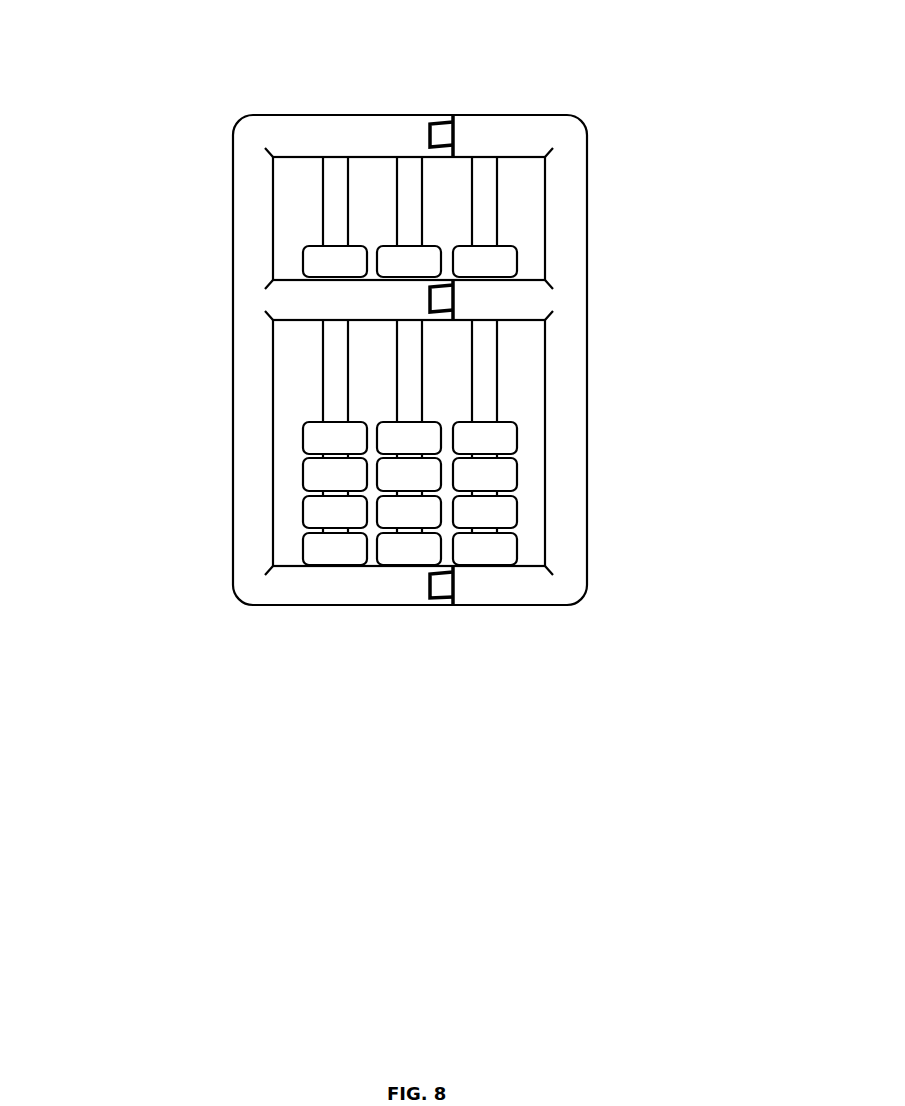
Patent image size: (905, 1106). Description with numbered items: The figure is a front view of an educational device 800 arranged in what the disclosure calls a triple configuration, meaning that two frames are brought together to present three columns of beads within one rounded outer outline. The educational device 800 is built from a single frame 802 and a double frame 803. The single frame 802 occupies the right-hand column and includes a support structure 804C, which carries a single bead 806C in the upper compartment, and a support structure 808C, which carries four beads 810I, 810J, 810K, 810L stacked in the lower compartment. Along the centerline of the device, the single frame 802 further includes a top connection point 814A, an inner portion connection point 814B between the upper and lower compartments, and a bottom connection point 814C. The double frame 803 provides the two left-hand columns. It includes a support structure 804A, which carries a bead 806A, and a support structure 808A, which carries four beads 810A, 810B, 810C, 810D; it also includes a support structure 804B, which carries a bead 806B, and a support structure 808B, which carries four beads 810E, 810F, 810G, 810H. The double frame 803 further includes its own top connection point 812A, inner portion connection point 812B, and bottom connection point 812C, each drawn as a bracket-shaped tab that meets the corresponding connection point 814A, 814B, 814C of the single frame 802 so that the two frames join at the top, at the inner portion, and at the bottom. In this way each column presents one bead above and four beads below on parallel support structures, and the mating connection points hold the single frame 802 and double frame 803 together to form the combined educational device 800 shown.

The educational device 800 is at (123, 23).
The single frame 802 is at (586, 121).
The double frame 803 is at (278, 106).
The support structure 804A is at (312, 200).
The support structure 804B is at (392, 192).
The support structure 804C is at (491, 188).
The bead 806A is at (300, 262).
The bead 806B is at (374, 248).
The bead 806C is at (519, 272).
The support structure 808A is at (312, 356).
The support structure 808B is at (426, 383).
The support structure 808C is at (496, 365).
The bead 810A is at (301, 433).
The bead 810B is at (301, 472).
The bead 810C is at (301, 512).
The bead 810D is at (301, 552).
The bead 810E is at (389, 444).
The bead 810F is at (395, 474).
The bead 810G is at (414, 512).
The bead 810H is at (429, 550).
The bead 810I is at (523, 437).
The bead 810J is at (523, 475).
The bead 810K is at (523, 515).
The bead 810L is at (523, 555).
The top connection point 812A is at (429, 127).
The inner portion connection point 812B is at (428, 299).
The bottom connection point 812C is at (430, 601).
The top connection point 814A is at (461, 132).
The inner portion connection point 814B is at (468, 304).
The bottom connection point 814C is at (474, 588).